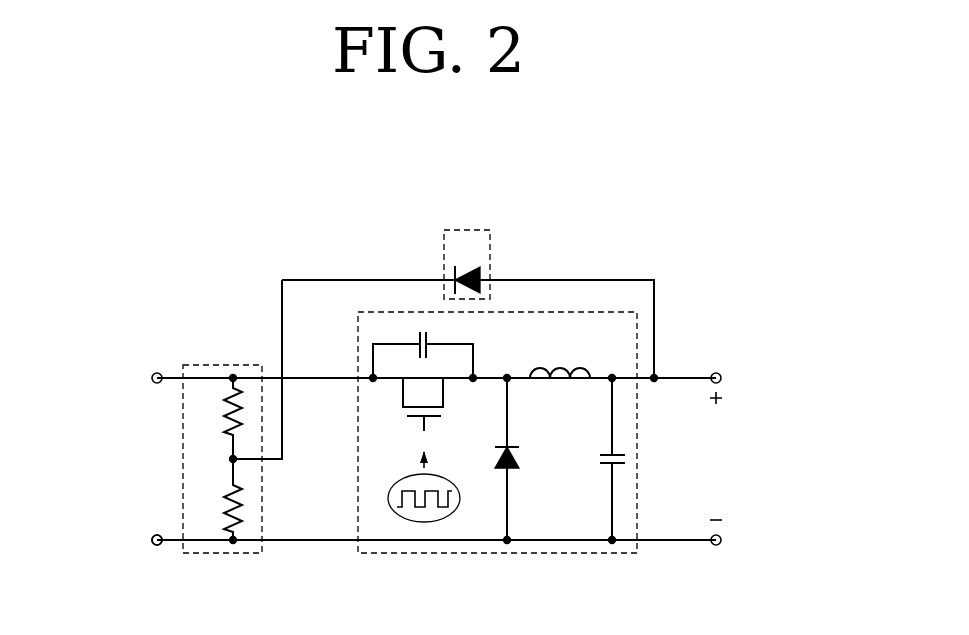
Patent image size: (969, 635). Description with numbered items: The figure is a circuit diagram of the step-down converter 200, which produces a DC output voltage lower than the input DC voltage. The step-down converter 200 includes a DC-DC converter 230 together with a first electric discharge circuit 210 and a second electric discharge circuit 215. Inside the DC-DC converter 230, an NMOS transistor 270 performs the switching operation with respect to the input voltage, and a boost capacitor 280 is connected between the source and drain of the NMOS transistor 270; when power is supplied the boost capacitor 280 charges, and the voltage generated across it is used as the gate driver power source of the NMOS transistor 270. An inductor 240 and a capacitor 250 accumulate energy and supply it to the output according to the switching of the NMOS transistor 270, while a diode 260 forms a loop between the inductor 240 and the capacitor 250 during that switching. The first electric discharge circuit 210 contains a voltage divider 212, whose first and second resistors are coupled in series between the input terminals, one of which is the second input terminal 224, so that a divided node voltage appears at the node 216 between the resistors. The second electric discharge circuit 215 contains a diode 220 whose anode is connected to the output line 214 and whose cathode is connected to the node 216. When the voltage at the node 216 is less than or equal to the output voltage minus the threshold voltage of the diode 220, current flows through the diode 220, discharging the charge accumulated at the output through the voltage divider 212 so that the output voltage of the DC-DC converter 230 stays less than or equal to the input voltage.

The step-down converter 200 is at (648, 183).
The first electric discharge circuit 210 is at (181, 364).
The voltage divider 212 is at (183, 448).
The output line 214 is at (720, 372).
The second electric discharge circuit 215 is at (443, 230).
The node 216 is at (237, 462).
The diode 220 is at (484, 268).
The second input terminal 224 is at (157, 546).
The DC-DC converter 230 is at (638, 312).
The inductor 240 is at (587, 367).
The capacitor 250 is at (621, 448).
The diode 260 is at (515, 474).
The NMOS transistor 270 is at (366, 405).
The boost capacitor 280 is at (413, 338).